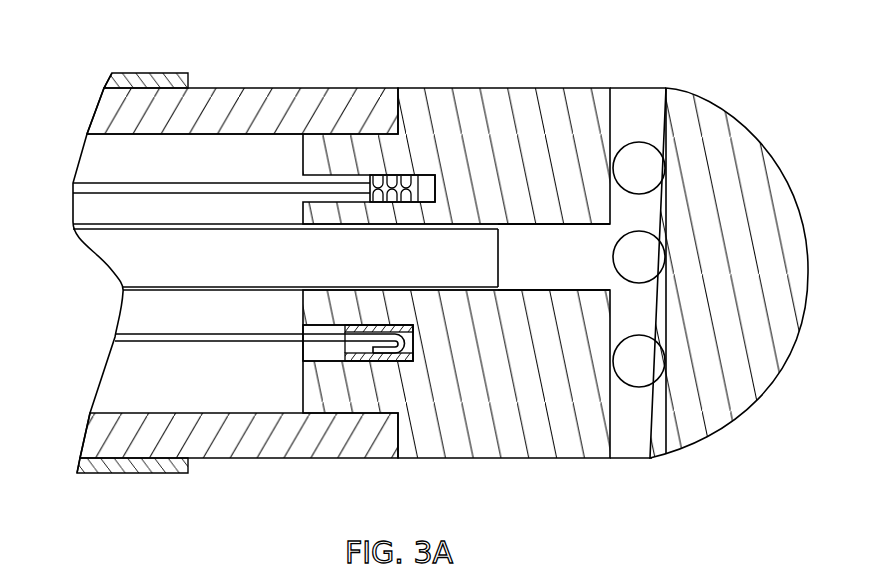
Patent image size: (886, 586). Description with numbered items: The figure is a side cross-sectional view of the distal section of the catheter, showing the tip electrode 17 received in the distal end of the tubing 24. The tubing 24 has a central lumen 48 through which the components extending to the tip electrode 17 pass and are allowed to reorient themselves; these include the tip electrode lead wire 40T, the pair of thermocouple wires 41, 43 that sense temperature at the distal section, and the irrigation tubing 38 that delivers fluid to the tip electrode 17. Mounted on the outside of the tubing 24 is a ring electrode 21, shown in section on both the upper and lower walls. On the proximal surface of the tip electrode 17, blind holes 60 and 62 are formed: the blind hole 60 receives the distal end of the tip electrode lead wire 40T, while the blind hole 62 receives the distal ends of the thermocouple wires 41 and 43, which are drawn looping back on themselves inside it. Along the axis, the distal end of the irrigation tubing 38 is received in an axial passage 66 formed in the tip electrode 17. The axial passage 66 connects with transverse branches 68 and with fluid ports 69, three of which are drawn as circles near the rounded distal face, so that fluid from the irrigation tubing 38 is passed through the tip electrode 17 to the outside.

The tip electrode 17 is at (549, 104).
The ring electrode 21 is at (155, 82).
The tubing 24 is at (273, 105).
The irrigation tubing 38 is at (125, 265).
The tip electrode lead wire 40T is at (165, 188).
The thermocouple wire 41 is at (115, 335).
The thermocouple wire 43 is at (115, 341).
The central lumen 48 is at (252, 177).
The blind hole 60 is at (424, 175).
The blind hole 62 is at (414, 343).
The axial passage 66 is at (542, 290).
The transverse branches 68 is at (667, 122).
The fluid ports 69 is at (638, 155).